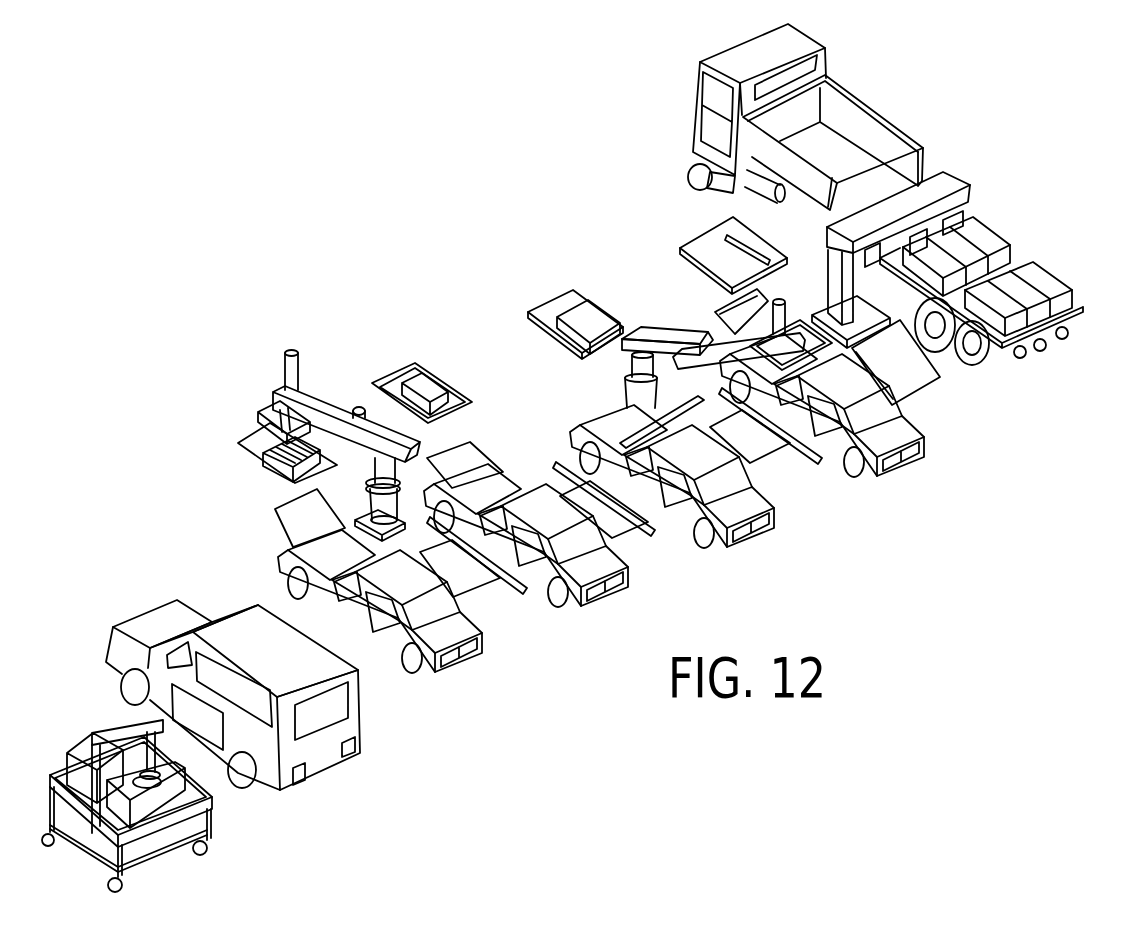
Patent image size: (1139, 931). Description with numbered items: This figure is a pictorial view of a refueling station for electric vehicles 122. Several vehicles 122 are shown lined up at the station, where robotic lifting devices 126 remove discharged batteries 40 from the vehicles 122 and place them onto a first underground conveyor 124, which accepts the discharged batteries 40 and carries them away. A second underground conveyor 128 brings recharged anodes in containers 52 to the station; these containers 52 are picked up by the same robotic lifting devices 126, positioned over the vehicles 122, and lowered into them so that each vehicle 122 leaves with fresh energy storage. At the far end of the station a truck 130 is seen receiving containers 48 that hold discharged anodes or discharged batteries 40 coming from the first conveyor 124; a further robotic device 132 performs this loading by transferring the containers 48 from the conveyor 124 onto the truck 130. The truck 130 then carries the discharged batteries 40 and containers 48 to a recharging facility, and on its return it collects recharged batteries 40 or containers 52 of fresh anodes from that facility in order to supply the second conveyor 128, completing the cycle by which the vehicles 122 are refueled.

The truck 130 is at (855, 120).
The further robotic device 132 is at (952, 180).
The discharged batteries 40 is at (990, 240).
The containers holding discharged anodes or discharged batteries 48 is at (1042, 273).
The second underground conveyor 128 is at (745, 262).
The containers of recharged anodes 52 is at (580, 317).
The robotic lifting devices 126 is at (672, 330).
The first underground conveyor 124 is at (905, 382).
The electric vehicles 122 is at (750, 520).